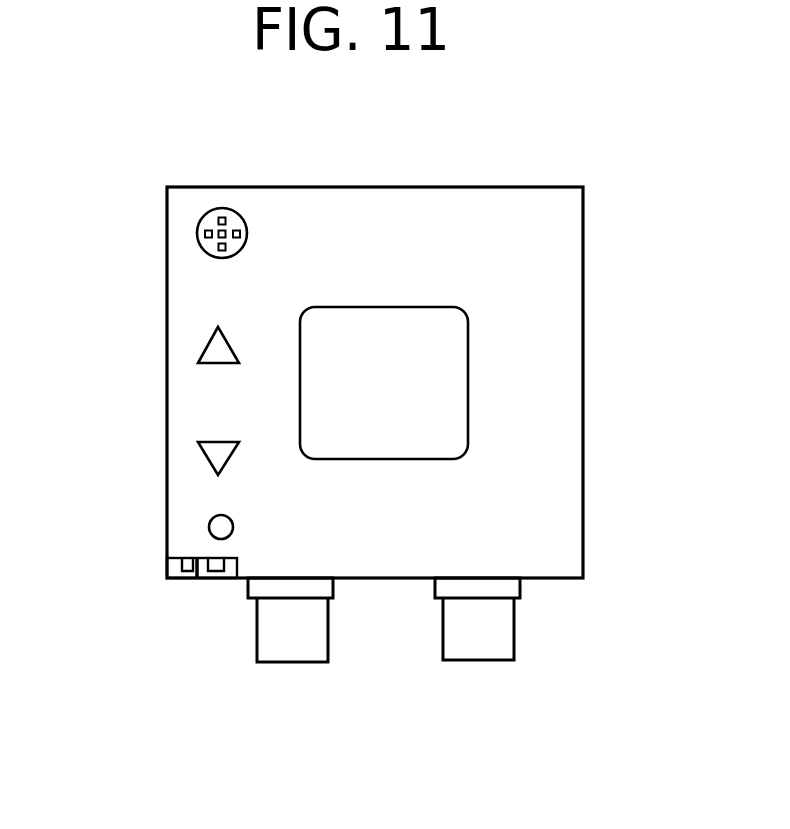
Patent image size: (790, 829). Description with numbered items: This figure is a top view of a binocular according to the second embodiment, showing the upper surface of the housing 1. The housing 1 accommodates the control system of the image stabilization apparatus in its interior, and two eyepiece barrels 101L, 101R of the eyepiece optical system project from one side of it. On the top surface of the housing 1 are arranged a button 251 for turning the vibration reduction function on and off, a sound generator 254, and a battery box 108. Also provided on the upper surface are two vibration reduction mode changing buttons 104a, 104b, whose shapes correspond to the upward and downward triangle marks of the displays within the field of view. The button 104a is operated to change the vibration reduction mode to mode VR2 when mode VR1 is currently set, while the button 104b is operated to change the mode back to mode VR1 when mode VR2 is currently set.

The housing 1 is at (513, 205).
The battery box 108 is at (393, 323).
The sound generator 254 is at (197, 233).
The vibration reduction mode changing button 104a is at (203, 352).
The vibration reduction mode changing button 104b is at (202, 445).
The button 251 is at (209, 527).
The eyepiece barrel 101L is at (267, 633).
The eyepiece barrel 101R is at (500, 625).